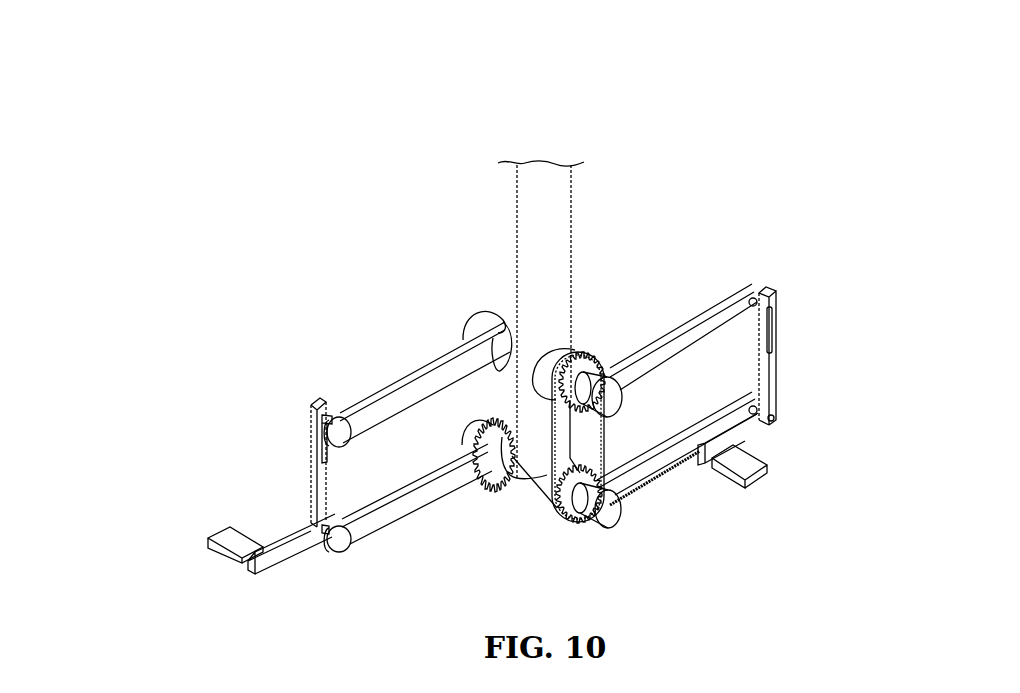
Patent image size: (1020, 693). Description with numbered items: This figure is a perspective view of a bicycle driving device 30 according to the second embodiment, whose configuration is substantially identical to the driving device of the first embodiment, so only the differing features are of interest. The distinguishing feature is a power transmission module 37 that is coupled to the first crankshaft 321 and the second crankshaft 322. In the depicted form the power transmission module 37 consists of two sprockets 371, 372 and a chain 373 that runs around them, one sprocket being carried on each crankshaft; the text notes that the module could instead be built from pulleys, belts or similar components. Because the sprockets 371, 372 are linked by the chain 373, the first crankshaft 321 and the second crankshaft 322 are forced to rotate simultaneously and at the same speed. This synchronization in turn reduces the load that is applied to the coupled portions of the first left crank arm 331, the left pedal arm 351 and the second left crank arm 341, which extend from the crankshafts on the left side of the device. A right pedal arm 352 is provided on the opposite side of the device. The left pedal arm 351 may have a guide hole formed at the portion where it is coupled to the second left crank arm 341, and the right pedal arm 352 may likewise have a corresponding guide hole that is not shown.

The bicycle driving device 30 is at (694, 108).
The first crankshaft 321 is at (584, 518).
The second crankshaft 322 is at (586, 355).
The first left crank arm 331 is at (668, 473).
The second left crank arm 341 is at (697, 318).
The left pedal arm 351 is at (778, 372).
The right pedal arm 352 is at (312, 463).
The power transmission module 37 is at (592, 431).
The sprocket 371 is at (552, 504).
The sprocket 372 is at (590, 354).
The chain 373 is at (605, 456).